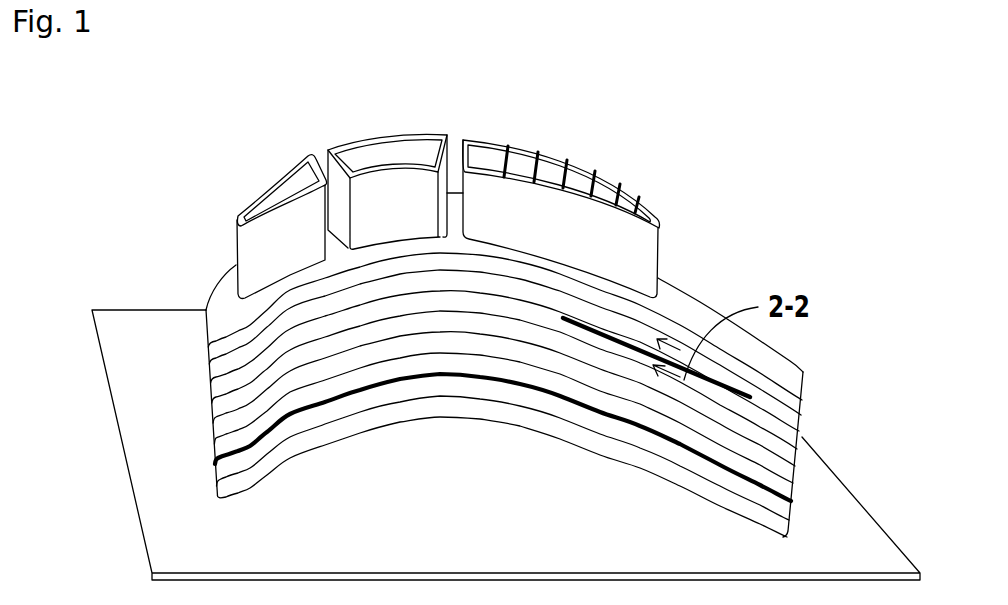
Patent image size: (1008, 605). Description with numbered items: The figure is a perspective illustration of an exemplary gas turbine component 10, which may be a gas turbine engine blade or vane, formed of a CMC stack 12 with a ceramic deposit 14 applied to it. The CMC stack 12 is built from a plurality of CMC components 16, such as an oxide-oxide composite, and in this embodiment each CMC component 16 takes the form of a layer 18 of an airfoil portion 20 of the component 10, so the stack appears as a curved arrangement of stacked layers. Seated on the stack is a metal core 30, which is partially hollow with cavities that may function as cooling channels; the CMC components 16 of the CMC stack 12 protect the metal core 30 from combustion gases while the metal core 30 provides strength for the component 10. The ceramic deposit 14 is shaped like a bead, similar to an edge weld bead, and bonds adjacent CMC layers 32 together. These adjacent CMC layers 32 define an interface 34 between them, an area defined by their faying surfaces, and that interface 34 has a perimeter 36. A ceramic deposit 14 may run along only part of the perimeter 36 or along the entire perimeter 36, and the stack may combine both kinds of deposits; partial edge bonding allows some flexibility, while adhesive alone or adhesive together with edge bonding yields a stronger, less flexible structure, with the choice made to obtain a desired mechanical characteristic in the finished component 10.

The gas turbine component 10 is at (744, 197).
The CMC stack 12 is at (822, 403).
The ceramic deposit 14 is at (738, 383).
The CMC component 16 is at (283, 454).
The layer 18 is at (503, 437).
The airfoil portion 20 is at (465, 439).
The metal core 30 is at (249, 172).
The adjacent CMC layers 32 is at (537, 343).
The interface 34 is at (673, 407).
The perimeter 36 is at (720, 413).